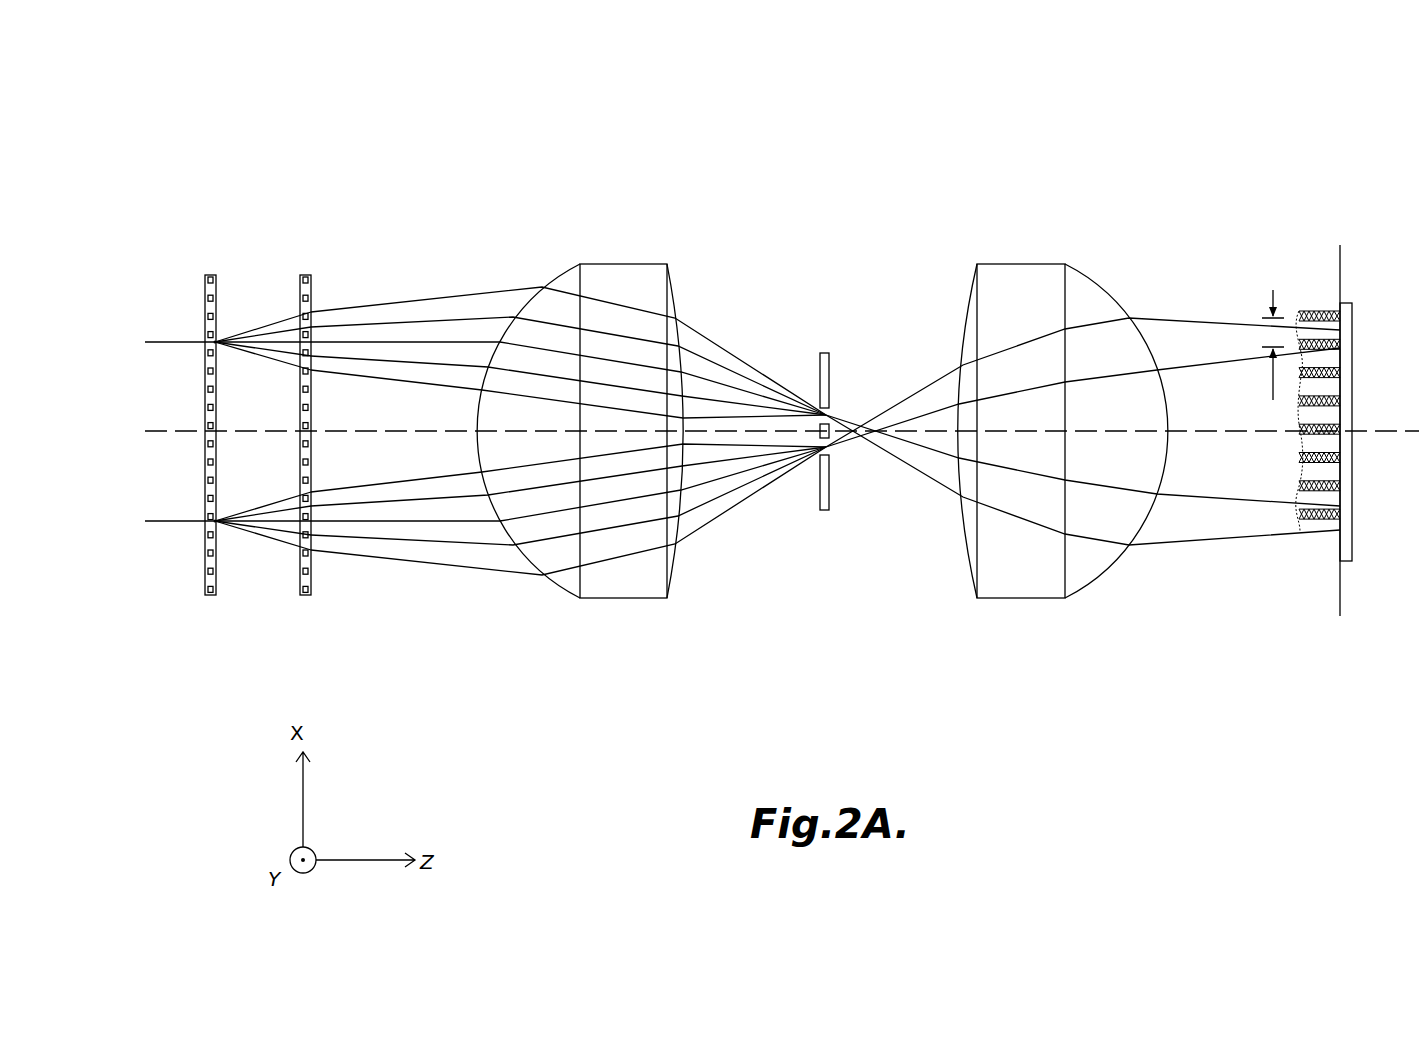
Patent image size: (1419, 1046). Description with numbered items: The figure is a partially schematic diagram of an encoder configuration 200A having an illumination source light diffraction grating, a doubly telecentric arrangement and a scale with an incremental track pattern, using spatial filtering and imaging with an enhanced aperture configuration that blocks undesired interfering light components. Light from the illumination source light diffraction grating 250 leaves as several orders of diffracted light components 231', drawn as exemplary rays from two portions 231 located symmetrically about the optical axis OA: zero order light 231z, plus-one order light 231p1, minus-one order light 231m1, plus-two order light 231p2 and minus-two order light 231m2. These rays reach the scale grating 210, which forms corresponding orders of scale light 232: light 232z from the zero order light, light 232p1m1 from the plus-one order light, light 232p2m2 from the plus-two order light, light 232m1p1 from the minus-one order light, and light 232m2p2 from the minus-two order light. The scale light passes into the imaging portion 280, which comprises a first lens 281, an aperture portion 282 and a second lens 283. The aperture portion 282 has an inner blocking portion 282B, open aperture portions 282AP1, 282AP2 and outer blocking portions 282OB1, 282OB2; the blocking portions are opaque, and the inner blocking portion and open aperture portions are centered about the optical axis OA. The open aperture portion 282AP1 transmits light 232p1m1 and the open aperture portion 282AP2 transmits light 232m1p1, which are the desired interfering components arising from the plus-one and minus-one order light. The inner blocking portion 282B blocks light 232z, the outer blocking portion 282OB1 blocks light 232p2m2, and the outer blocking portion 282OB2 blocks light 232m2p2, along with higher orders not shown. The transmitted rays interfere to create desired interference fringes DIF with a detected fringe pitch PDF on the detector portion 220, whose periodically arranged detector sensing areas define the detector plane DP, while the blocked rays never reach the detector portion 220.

The encoder configuration 200A is at (1171, 108).
The scale grating 210 is at (305, 275).
The detector portion 220 is at (1355, 386).
The diffracted light components 231 is at (177, 435).
The diffracted light components 231' is at (313, 183).
The +2 order light 231p2 is at (296, 316).
The +1 order light 231p1 is at (284, 330).
The 0 order light 231z is at (271, 336).
The −1 order light 231m1 is at (256, 338).
The −2 order light 231m2 is at (238, 339).
The scale light 232 is at (527, 282).
The −2 order portion of scale light 232p2m2 is at (507, 290).
The −1 order portion of scale light 232p1m1 is at (480, 318).
The 0 order portion of scale light 232z is at (458, 340).
The +1 order portion of scale light 232m1p1 is at (432, 363).
The +2 order portion of scale light 232m2p2 is at (403, 380).
The illumination source light diffraction grating 250 is at (207, 277).
The imaging portion 280 is at (822, 513).
The first lens 281 is at (630, 600).
The aperture portion 282 is at (832, 490).
The outer blocking portion 282OB1 is at (825, 352).
The open aperture portion 282AP1 is at (834, 405).
The inner blocking portion 282B is at (838, 450).
The open aperture portion 282AP2 is at (837, 462).
The outer blocking portion 282OB2 is at (825, 512).
The second lens 283 is at (1063, 473).
The desired interference fringes DIF is at (1317, 308).
The detected fringe pitch PDF is at (1279, 326).
The detector plane DP is at (1340, 446).
The optical axis OA is at (1364, 432).